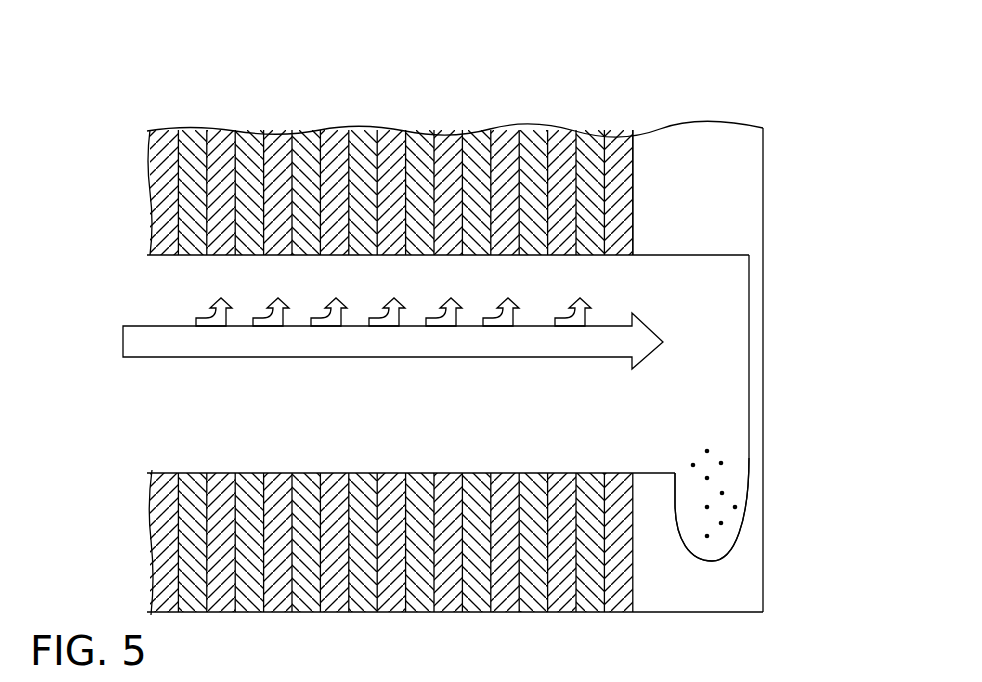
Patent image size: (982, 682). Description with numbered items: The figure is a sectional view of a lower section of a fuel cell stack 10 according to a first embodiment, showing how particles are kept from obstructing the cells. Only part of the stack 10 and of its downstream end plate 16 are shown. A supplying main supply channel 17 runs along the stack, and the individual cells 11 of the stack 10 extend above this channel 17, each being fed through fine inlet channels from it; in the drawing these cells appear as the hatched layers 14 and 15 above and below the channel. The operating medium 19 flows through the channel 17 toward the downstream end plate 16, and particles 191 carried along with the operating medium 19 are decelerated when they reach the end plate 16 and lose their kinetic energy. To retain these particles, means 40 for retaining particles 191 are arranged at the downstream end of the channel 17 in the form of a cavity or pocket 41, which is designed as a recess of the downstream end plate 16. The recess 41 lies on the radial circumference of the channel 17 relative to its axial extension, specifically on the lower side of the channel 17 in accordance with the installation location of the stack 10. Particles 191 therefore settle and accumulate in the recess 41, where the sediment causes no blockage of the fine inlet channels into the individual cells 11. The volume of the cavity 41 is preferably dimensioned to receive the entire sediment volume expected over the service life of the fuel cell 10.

The fuel cell stack 10 is at (141, 64).
The individual cells 11 is at (510, 121).
The first electrode layer 14 is at (483, 160).
The second electrode layer 15 is at (336, 162).
The downstream end plate 16 is at (717, 147).
The supplying main supply channel 17 is at (421, 436).
The operating medium 19 is at (194, 343).
The particles 191 is at (738, 458).
The means for retaining particles 40 is at (759, 555).
The cavity (recess) 41 is at (744, 518).